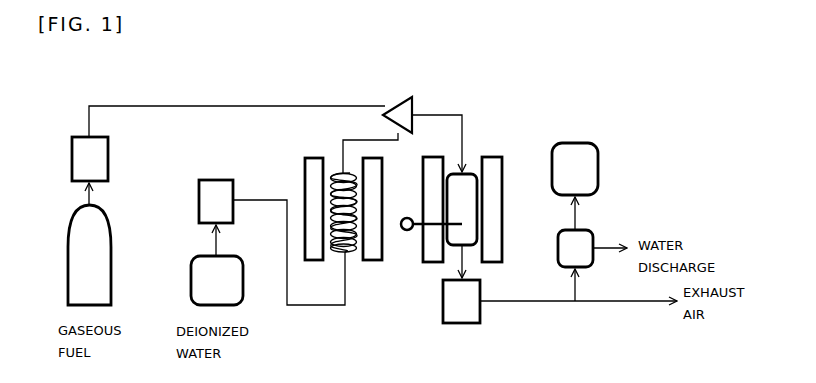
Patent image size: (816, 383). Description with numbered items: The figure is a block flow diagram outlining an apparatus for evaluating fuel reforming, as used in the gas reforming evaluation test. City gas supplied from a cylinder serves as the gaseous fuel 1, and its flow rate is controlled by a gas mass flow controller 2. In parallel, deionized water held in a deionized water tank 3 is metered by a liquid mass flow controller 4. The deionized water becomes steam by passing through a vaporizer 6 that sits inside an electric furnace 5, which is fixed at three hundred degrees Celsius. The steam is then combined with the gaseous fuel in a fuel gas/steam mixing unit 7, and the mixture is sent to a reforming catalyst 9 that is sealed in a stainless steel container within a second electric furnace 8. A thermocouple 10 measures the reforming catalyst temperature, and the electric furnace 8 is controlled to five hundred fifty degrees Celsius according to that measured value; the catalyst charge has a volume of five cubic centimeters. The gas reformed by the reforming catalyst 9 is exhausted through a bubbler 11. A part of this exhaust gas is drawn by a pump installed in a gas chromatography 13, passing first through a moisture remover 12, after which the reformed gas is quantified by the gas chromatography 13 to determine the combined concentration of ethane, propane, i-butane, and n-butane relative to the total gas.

The gaseous fuel 1 is at (89, 244).
The gas mass flow controller 2 is at (90, 159).
The deionized water tank 3 is at (217, 265).
The liquid mass flow controller 4 is at (216, 201).
The electric furnace 5 is at (305, 184).
The vaporizer 6 is at (350, 253).
The fuel gas/steam mixing unit 7 is at (397, 115).
The electric furnace 8 is at (423, 185).
The reforming catalyst 9 is at (462, 209).
The thermocouple 10 is at (417, 229).
The bubbler 11 is at (461, 301).
The moisture remover 12 is at (575, 248).
The gas chromatography 13 is at (575, 169).